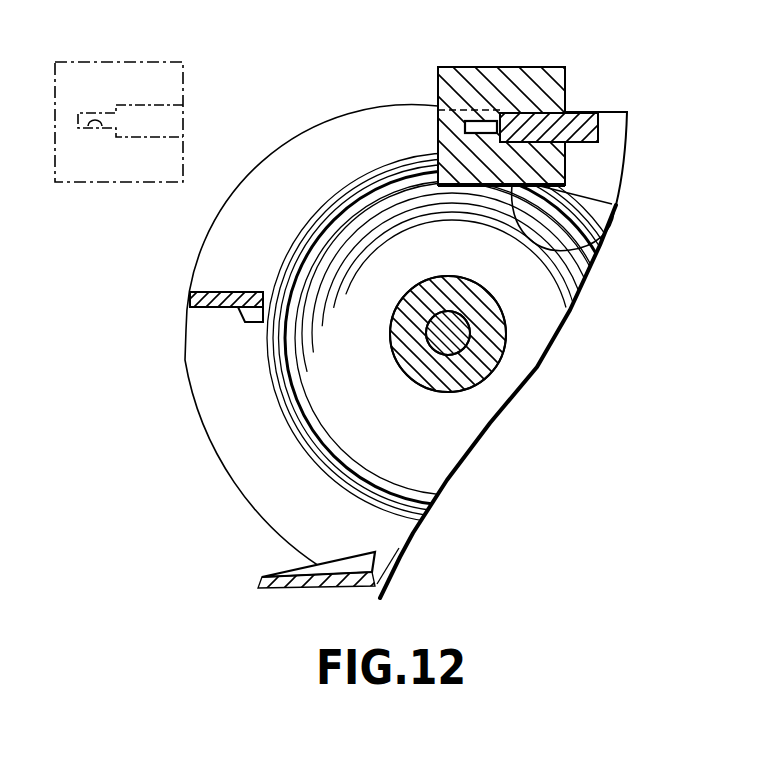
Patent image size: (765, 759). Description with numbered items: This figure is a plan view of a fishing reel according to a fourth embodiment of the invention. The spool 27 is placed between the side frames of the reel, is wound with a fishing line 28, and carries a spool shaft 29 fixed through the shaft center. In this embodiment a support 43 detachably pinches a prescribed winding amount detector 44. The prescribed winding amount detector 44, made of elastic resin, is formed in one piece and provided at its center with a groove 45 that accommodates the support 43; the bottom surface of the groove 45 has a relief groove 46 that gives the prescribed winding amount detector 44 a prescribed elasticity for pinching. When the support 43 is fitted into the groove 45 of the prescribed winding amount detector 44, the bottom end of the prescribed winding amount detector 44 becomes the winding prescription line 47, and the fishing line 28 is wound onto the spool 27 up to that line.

The spool 27 is at (462, 419).
The fishing line 28 is at (603, 203).
The spool shaft 29 is at (470, 333).
The support 43 is at (584, 118).
The prescribed winding amount detector 44 is at (509, 64).
The groove 45 is at (165, 127).
The relief groove 46 is at (98, 124).
The winding prescription line 47 is at (596, 247).